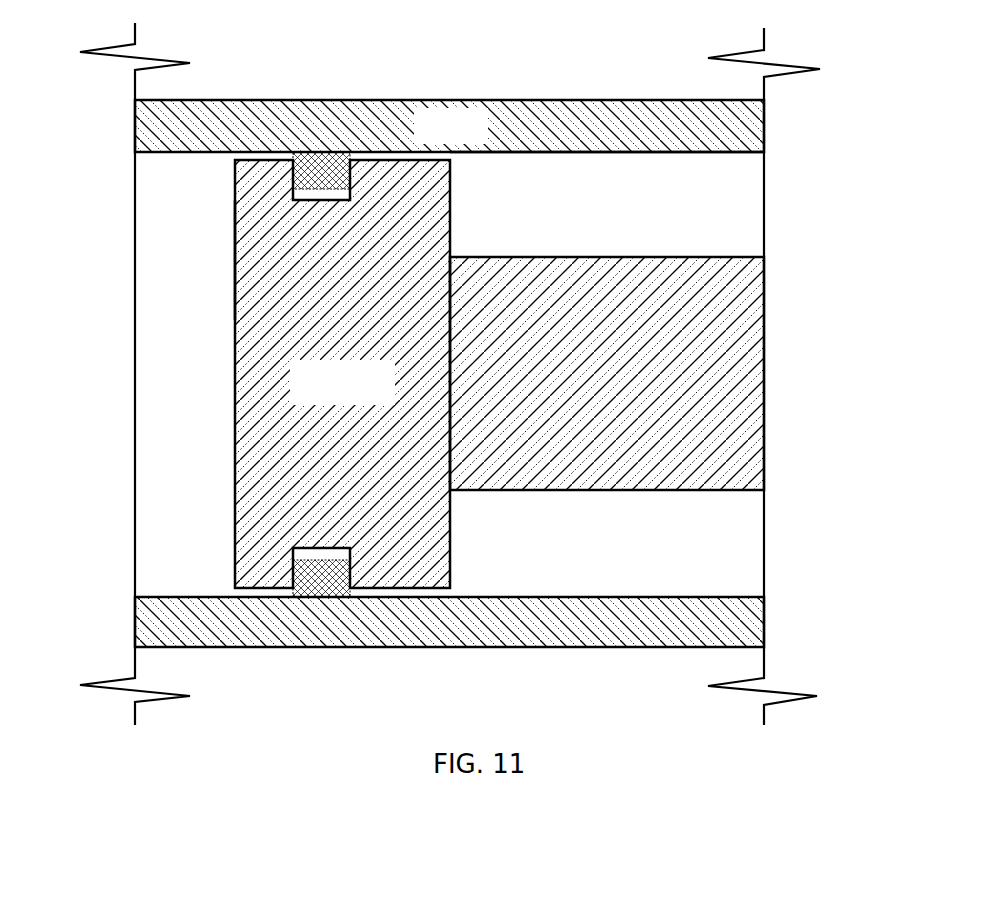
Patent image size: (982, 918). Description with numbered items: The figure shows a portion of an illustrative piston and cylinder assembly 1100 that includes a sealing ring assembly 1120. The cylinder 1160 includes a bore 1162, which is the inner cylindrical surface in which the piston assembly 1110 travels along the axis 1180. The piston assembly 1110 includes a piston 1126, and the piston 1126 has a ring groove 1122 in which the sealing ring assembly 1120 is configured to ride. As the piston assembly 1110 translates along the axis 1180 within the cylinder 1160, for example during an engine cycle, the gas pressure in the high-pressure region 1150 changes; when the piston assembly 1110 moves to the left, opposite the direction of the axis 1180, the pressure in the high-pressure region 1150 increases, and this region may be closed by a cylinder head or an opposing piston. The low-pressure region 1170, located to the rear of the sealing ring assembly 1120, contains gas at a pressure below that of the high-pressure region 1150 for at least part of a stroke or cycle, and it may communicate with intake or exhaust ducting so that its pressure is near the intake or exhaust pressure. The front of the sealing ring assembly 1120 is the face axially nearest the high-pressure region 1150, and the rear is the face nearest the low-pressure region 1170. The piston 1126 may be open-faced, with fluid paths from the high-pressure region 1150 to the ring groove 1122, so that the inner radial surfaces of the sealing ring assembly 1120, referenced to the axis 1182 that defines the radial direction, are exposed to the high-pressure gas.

The piston and cylinder assembly 1100 is at (718, 94).
The piston assembly 1110 is at (363, 392).
The sealing ring assembly 1120 is at (350, 177).
The ring groove 1122 is at (279, 548).
The piston 1126 is at (235, 255).
The high-pressure region 1150 is at (197, 326).
The cylinder 1160 is at (475, 136).
The bore 1162 is at (733, 165).
The low-pressure region 1170 is at (635, 211).
The axis 1180 is at (807, 375).
The axis defining the radial direction 1182 is at (807, 375).